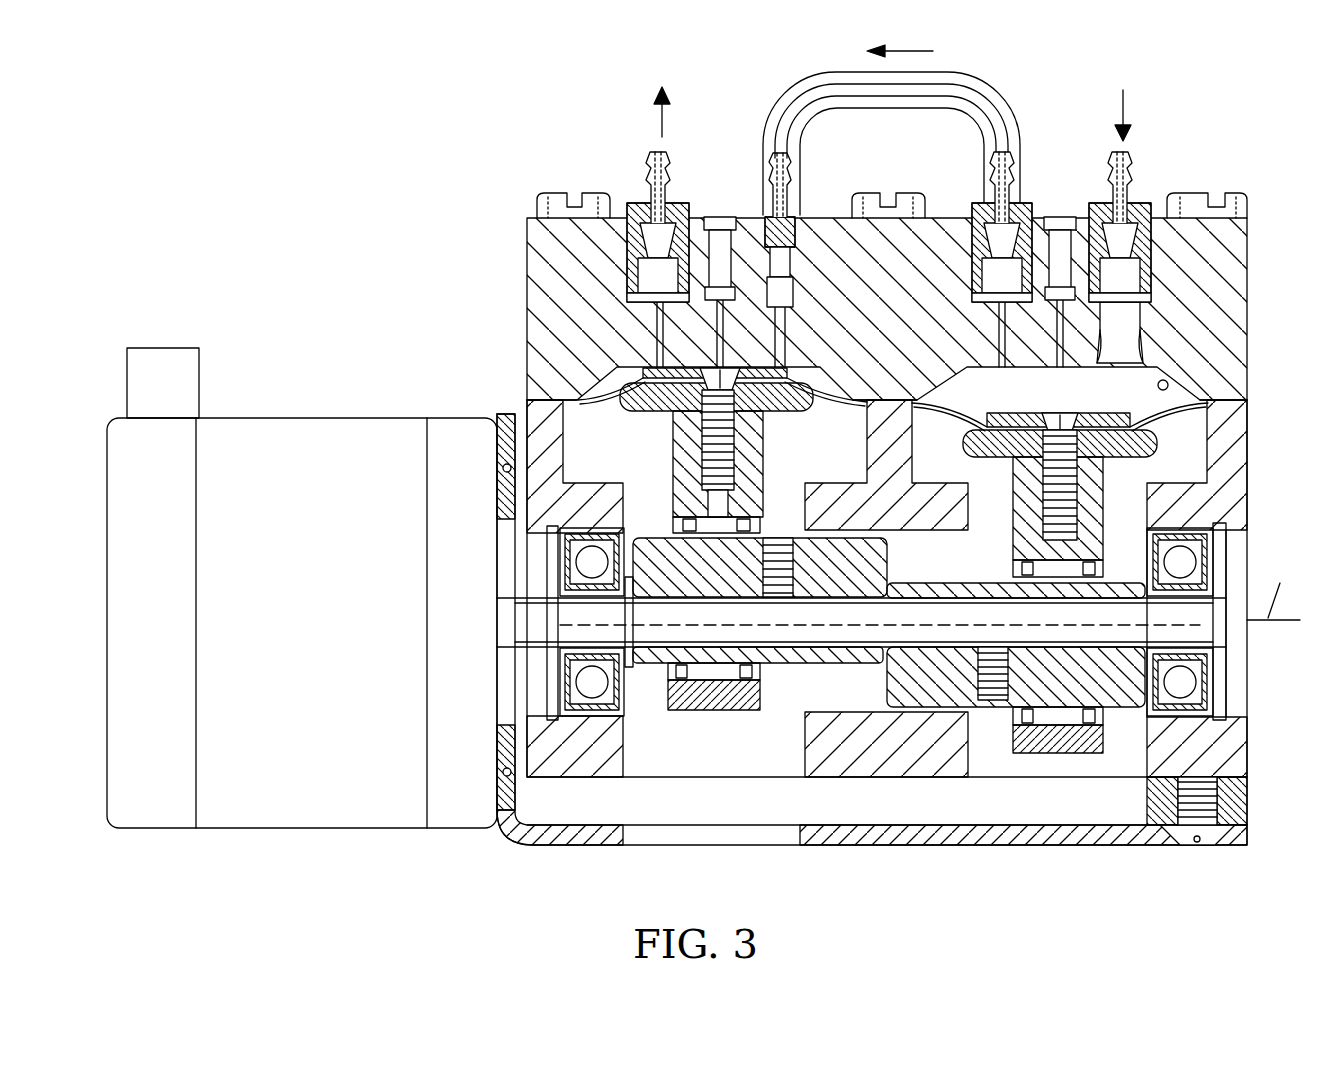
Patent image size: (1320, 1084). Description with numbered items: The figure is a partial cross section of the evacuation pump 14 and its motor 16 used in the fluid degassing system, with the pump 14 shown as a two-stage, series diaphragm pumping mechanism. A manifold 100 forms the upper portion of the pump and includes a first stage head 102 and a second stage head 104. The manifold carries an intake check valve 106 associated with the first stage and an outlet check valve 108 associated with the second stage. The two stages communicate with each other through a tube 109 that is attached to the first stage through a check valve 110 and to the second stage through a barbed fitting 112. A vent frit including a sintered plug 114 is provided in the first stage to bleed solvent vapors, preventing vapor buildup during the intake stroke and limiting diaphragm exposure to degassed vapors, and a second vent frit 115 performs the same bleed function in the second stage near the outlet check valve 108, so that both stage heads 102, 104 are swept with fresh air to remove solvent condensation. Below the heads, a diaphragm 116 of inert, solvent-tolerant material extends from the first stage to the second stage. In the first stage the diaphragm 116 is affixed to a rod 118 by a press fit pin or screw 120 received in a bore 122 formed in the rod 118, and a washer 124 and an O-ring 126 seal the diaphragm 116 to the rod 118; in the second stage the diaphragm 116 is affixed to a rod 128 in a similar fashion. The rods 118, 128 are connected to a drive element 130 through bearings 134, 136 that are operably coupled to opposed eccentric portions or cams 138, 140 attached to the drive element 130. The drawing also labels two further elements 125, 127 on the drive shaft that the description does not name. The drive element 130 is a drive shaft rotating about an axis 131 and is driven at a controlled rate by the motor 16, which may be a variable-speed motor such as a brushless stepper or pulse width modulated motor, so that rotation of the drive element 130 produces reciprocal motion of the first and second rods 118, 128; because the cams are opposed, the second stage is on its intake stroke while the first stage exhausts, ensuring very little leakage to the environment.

The pump 14 is at (624, 195).
The motor 16 is at (300, 416).
The manifold 100 is at (527, 262).
The first stage head 102 is at (1132, 344).
The second stage head 104 is at (578, 395).
The intake check valve 106 is at (1163, 388).
The outlet check valve 108 is at (657, 205).
The tube 109 is at (980, 72).
The check valve 110 is at (1010, 212).
The barbed fitting 112 is at (765, 196).
The sintered plug 114 is at (1058, 217).
The second vent frit 115 is at (723, 217).
The diaphragm 116 is at (603, 410).
The rod 118 is at (1010, 517).
The press fit pin or screw 120 is at (1053, 400).
The bore 122 is at (1050, 580).
The washer 124 is at (1017, 413).
The first bearing 125 is at (585, 677).
The O-ring 126 is at (1107, 457).
The second bearing 127 is at (1165, 690).
The rod 128 is at (760, 467).
The drive element 130 is at (790, 640).
The axis 131 is at (1273, 590).
The bearing 134 is at (668, 690).
The bearing 136 is at (1010, 727).
The eccentric portion or cam 138 is at (680, 533).
The eccentric portion or cam 140 is at (900, 712).